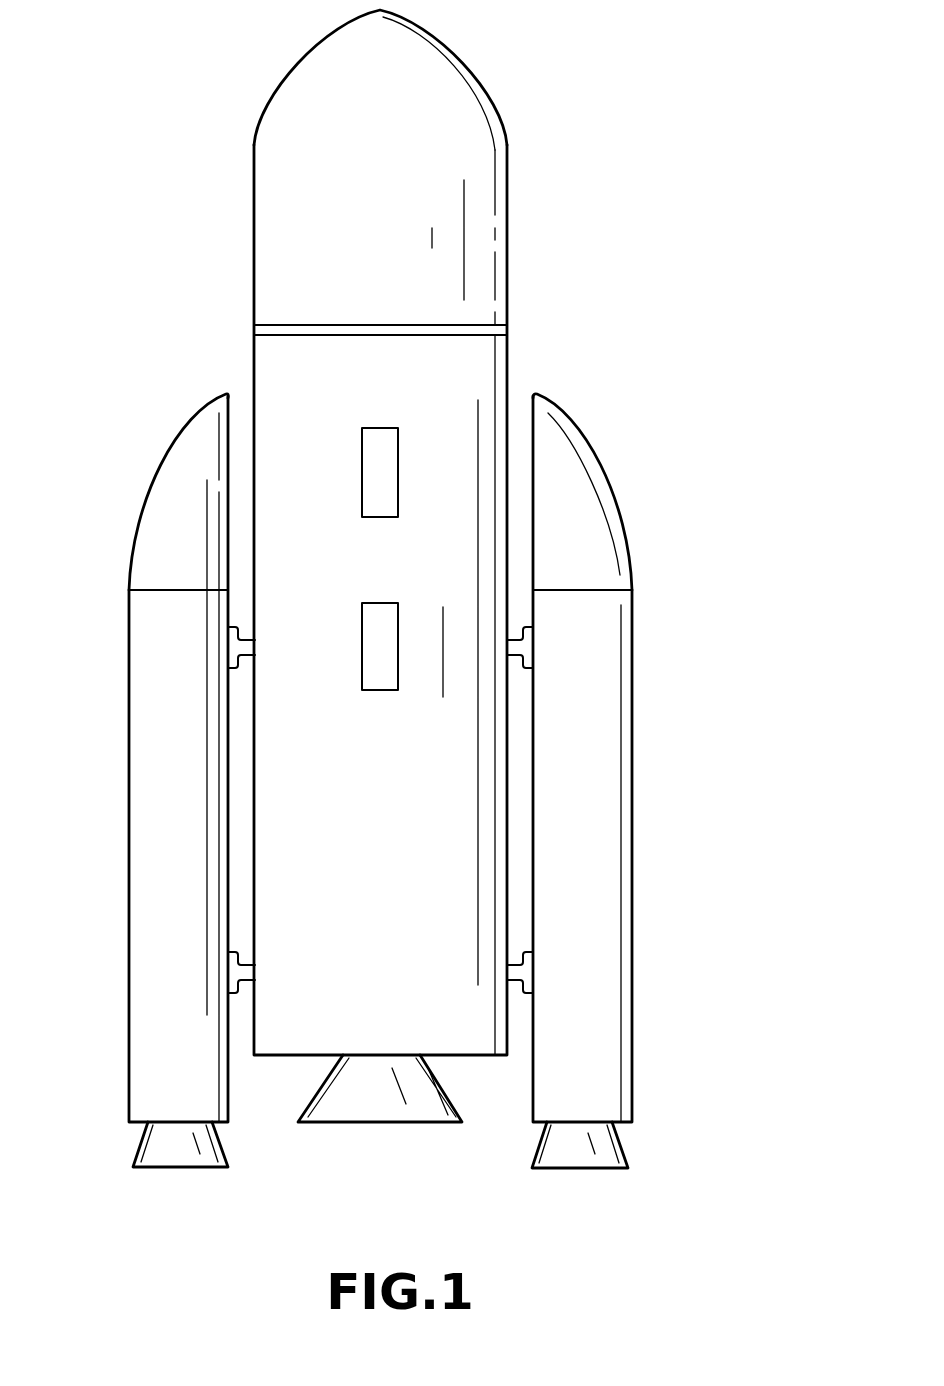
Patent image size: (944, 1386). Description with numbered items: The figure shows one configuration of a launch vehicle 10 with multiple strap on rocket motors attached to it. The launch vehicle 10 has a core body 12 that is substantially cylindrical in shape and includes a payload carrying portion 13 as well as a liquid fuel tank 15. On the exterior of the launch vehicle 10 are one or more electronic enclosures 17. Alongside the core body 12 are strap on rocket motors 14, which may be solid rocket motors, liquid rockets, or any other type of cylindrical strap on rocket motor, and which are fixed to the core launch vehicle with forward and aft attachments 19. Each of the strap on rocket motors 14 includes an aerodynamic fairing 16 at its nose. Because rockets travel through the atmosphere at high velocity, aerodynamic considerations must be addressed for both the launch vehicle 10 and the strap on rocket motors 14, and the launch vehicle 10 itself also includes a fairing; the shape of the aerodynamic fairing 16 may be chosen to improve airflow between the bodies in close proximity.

The launch vehicle 10 is at (700, 382).
The core body 12 is at (503, 308).
The payload carrying portion 13 is at (288, 1046).
The strap on rocket motors 14 is at (133, 772).
The liquid fuel tank 15 is at (507, 218).
The aerodynamic fairing 16 is at (144, 522).
The electronic enclosures 17 is at (399, 458).
The forward and aft attachments 19 is at (244, 650).